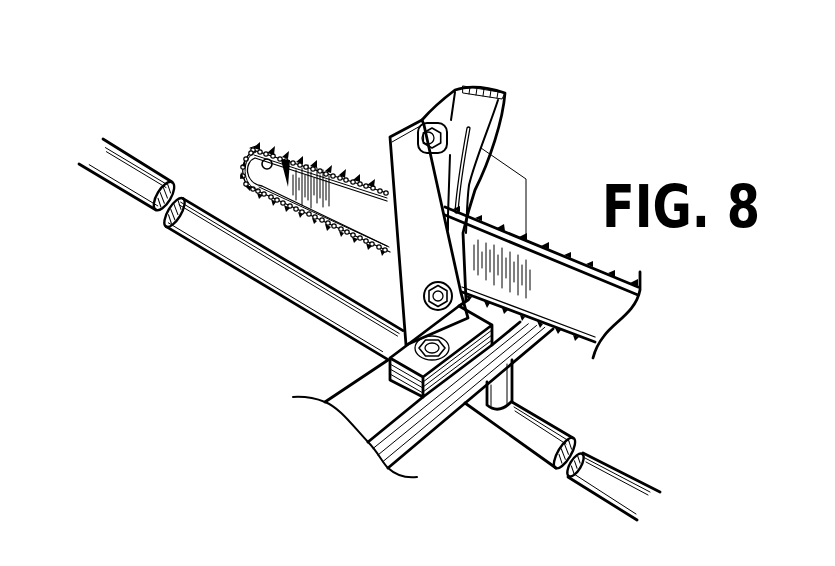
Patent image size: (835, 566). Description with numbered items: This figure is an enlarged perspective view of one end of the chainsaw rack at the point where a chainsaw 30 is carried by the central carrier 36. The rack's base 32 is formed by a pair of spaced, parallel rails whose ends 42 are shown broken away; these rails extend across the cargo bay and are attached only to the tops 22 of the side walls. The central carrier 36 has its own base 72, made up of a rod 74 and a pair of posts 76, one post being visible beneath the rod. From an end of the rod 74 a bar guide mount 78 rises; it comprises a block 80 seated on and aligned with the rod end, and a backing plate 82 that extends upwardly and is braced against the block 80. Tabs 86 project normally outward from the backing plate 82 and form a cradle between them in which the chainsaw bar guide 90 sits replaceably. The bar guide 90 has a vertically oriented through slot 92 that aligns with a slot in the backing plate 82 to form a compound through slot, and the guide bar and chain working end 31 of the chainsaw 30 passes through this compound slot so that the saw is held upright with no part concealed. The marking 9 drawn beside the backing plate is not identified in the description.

The section view indicator 9 is at (388, 133).
The tops of side walls 22 is at (141, 562).
The chainsaw 30 is at (248, 143).
The guide bar and chain working end 31 is at (266, 140).
The base 32 is at (233, 266).
The central carrier 36 is at (453, 90).
The ends of rails 42 is at (108, 165).
The base of central carrier 72 is at (432, 437).
The rod 74 is at (340, 393).
The pair of posts 76 is at (500, 390).
The bar guide mount 78 is at (387, 153).
The block 80 is at (380, 322).
The backing plate 82 is at (422, 120).
The tabs 86 is at (427, 162).
The chainsaw bar guide 90 is at (478, 88).
The through slot 92 is at (482, 147).